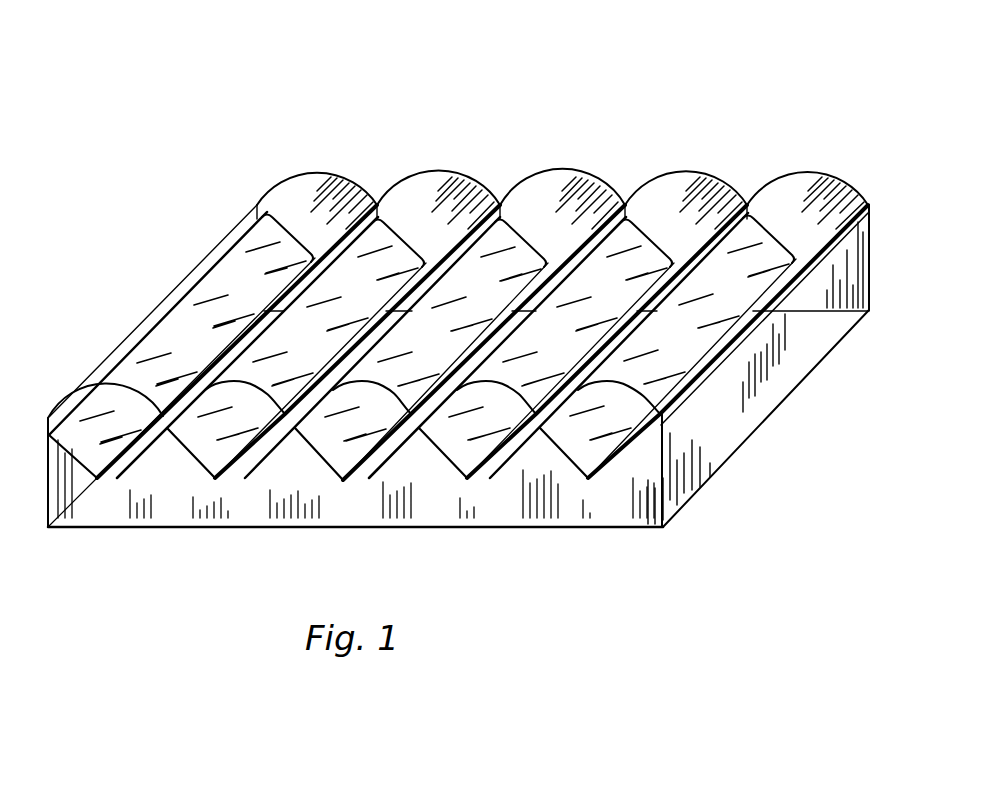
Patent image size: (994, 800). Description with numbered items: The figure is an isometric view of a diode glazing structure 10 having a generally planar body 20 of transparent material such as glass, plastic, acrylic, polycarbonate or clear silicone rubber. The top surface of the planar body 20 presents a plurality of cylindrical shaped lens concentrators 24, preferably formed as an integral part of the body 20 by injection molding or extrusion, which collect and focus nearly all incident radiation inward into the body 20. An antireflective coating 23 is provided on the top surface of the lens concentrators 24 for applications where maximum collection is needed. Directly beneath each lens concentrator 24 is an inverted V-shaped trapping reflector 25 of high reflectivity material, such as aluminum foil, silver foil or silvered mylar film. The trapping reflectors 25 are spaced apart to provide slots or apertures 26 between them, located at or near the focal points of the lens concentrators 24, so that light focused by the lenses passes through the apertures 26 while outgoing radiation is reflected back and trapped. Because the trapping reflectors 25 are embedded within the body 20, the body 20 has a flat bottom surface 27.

The diode glazing structure 10 is at (458, 317).
The planar body 20 is at (172, 514).
The antireflective coating 23 is at (549, 170).
The lens concentrators 24 is at (777, 180).
The trapping reflector 25 is at (322, 466).
The apertures 26 is at (108, 480).
The flat bottom surface 27 is at (624, 516).